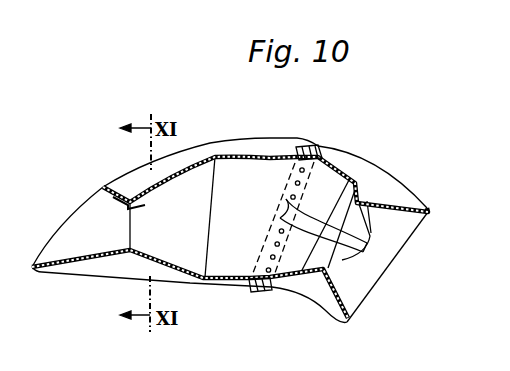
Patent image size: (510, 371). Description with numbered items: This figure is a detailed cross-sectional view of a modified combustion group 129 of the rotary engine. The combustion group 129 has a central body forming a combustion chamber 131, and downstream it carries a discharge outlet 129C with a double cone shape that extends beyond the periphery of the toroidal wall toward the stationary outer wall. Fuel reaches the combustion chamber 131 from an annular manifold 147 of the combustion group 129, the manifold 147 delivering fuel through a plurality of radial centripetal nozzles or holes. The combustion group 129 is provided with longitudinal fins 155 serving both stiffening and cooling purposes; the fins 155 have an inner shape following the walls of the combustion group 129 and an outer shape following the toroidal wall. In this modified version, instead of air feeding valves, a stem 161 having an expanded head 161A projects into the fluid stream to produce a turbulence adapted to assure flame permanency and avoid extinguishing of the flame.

The longitudinal fins 155 is at (142, 180).
The combustion group 129 is at (214, 156).
The discharge outlet 129C is at (127, 203).
The combustion chamber 131 is at (258, 177).
The annular manifold 147 is at (309, 147).
The stem 161 is at (317, 216).
The expanded head 161A is at (282, 210).